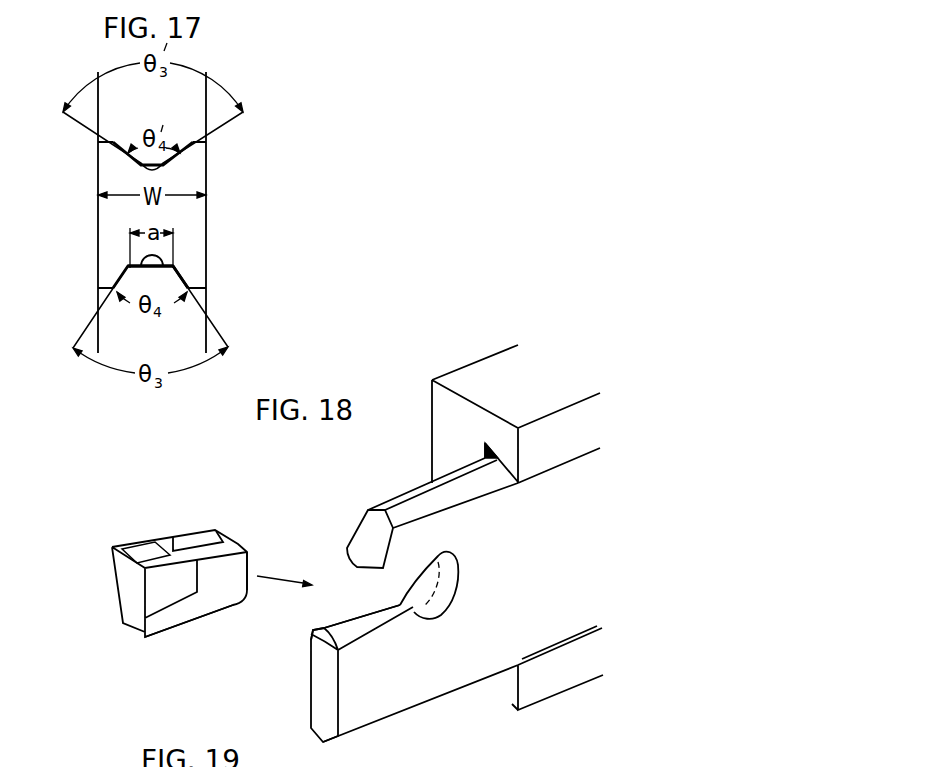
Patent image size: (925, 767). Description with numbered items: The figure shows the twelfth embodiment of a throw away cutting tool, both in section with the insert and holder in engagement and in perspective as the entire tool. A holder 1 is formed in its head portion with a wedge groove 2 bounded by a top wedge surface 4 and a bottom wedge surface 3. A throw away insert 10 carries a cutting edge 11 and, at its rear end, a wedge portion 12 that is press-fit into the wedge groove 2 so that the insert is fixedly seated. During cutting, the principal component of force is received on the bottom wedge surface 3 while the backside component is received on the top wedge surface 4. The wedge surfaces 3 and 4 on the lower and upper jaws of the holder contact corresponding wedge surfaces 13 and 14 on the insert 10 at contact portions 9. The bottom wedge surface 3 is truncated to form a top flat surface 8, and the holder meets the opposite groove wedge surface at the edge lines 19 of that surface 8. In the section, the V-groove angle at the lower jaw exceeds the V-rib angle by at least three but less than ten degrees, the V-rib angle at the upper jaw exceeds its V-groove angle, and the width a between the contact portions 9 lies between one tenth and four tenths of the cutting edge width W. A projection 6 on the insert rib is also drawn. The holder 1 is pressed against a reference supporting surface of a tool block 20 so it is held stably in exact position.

In FIG. 18, the holder 1 is at (452, 693).
In FIG. 18, the wedge groove 2 is at (387, 587).
In FIG. 17, the bottom wedge surface 3 is at (112, 292).
In FIG. 18, the bottom wedge surface 3 is at (363, 633).
In FIG. 17, the top wedge surface 4 is at (133, 158).
In FIG. 18, the top wedge surface 4 is at (380, 565).
In FIG. 17, the projection 6 is at (156, 263).
In FIG. 18, the top flat surface 8 is at (352, 627).
In FIG. 17, the contact portions 9 is at (128, 267).
In FIG. 17, the throw away insert 10 is at (208, 169).
In FIG. 18, the throw away insert 10 is at (150, 537).
In FIG. 18, the cutting edge 11 is at (118, 558).
In FIG. 18, the wedge portion 12 is at (215, 587).
In FIG. 17, the wedge surface 13 is at (190, 284).
In FIG. 18, the wedge surface 13 is at (139, 636).
In FIG. 17, the wedge surface 14 is at (137, 167).
In FIG. 18, the wedge surface 14 is at (216, 538).
In FIG. 18, the edge lines 19 is at (342, 656).
In FIG. 18, the tool block 20 is at (463, 366).